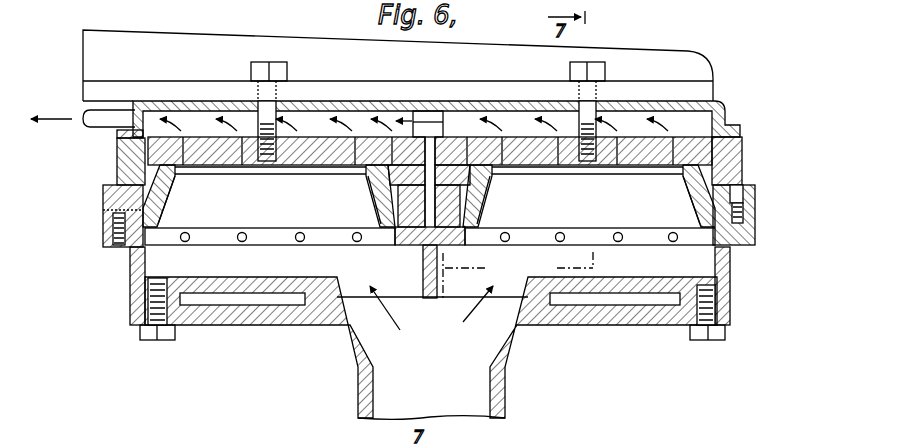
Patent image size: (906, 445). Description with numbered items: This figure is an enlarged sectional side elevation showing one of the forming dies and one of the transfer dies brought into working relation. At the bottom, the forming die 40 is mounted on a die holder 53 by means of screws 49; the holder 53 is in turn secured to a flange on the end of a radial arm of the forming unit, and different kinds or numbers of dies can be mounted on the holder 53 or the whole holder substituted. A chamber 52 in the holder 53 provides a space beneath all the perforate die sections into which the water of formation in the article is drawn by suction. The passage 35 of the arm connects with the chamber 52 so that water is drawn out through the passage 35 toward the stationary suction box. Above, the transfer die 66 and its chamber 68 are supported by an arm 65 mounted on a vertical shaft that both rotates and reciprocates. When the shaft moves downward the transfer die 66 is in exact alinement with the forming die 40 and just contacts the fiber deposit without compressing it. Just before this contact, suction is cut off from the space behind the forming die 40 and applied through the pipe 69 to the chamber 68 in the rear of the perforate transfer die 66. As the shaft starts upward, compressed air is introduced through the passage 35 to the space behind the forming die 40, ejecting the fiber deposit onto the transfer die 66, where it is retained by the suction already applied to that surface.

The arm 65 is at (688, 52).
The chamber 68 is at (700, 118).
The transfer die 66 is at (743, 147).
The pipe 69 is at (101, 122).
The forming die 40 is at (100, 220).
The screw 49 is at (110, 238).
The die holder 53 is at (133, 283).
The chamber 52 is at (263, 268).
The passage 35 is at (380, 396).